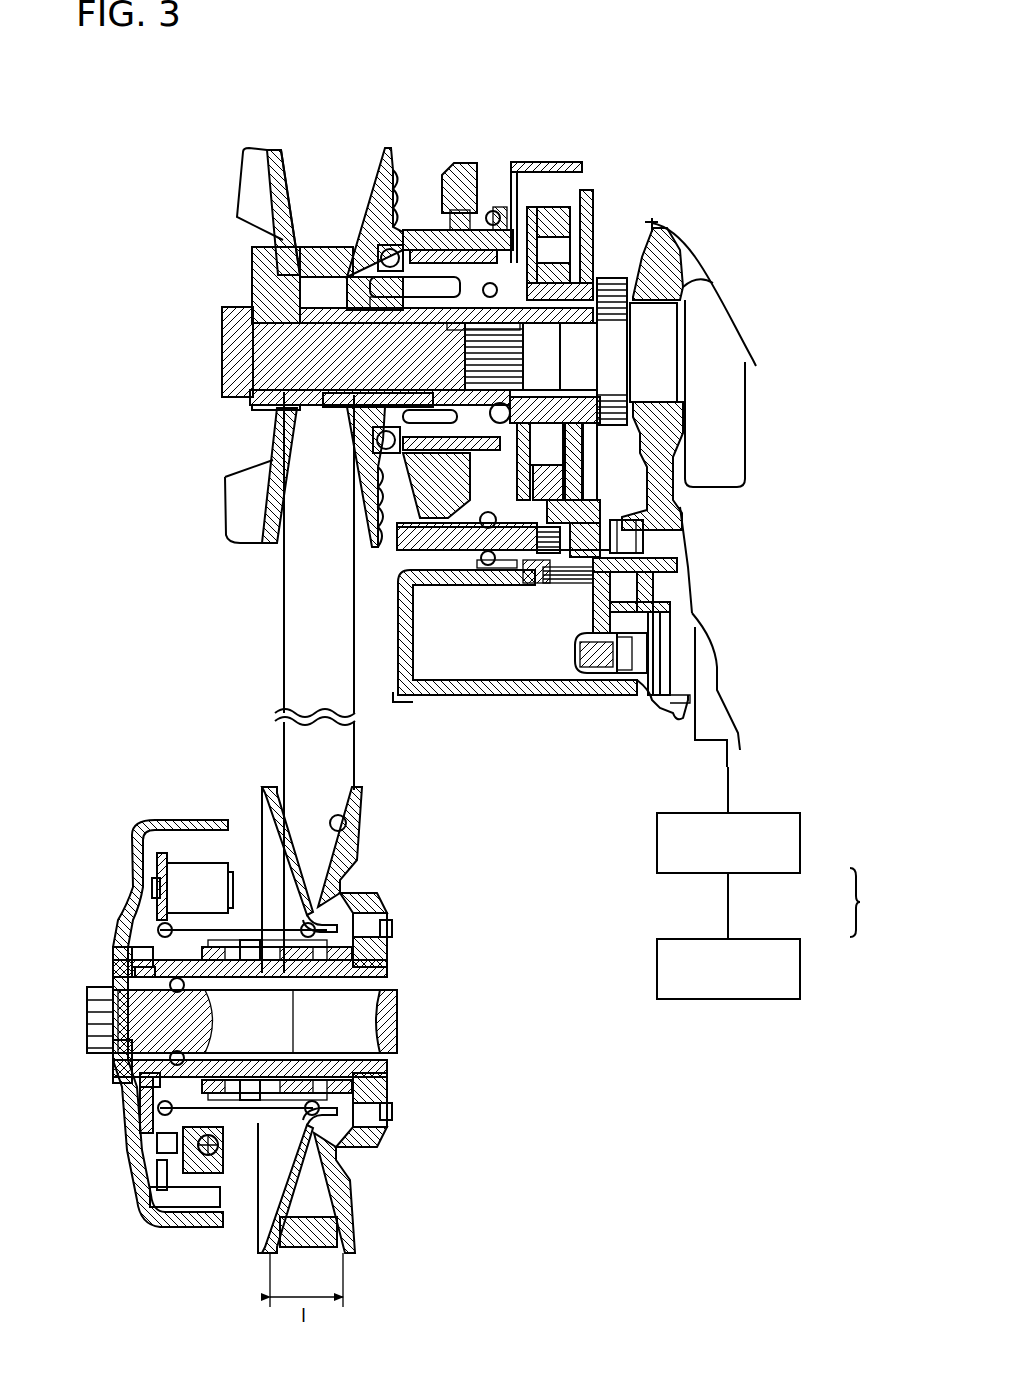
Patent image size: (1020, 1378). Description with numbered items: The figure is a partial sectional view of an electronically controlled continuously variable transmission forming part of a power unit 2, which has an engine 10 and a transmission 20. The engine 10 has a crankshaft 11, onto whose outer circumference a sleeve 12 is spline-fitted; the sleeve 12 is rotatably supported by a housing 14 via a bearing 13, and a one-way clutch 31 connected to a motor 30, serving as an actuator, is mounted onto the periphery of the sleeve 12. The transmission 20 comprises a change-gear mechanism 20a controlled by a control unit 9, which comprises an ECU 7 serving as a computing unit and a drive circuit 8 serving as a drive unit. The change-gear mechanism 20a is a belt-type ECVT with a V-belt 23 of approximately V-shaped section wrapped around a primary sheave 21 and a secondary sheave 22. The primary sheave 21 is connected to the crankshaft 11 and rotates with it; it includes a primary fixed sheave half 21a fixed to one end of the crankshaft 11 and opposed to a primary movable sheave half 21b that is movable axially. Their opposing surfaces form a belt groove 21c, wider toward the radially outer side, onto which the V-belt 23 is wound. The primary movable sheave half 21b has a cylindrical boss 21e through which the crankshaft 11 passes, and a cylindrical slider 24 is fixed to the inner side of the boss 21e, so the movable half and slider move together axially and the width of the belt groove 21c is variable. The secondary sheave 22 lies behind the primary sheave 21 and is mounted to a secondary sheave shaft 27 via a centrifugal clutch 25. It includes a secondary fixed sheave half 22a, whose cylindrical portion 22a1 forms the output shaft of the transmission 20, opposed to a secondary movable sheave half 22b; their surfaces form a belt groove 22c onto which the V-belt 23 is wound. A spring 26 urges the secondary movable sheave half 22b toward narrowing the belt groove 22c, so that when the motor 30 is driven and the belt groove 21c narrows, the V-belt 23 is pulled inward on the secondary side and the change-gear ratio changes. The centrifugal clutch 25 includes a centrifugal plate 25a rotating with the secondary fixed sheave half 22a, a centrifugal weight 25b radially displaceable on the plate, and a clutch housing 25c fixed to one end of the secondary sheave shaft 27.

The power unit 2 is at (627, 107).
The ECU 7 is at (800, 955).
The drive circuit 8 is at (800, 843).
The control unit 9 is at (863, 902).
The engine 10 is at (750, 412).
The crankshaft 11 is at (708, 328).
The sleeve 12 is at (577, 317).
The bearing 13 is at (513, 163).
The housing 14 is at (417, 615).
The transmission 20 is at (137, 218).
The change-gear mechanism 20a is at (277, 612).
The primary sheave 21 is at (248, 265).
The primary fixed sheave half 21a is at (260, 217).
The primary movable sheave half 21b is at (393, 187).
The belt groove 21c is at (297, 230).
The boss 21e is at (400, 278).
The secondary sheave 22 is at (353, 1190).
The secondary fixed sheave half 22a is at (357, 858).
The cylindrical portion 22a1 is at (387, 953).
The secondary movable sheave half 22b is at (262, 803).
The belt groove 22c is at (343, 818).
The V-belt 23 is at (345, 753).
The slider 24 is at (353, 438).
The centrifugal clutch 25 is at (102, 868).
The centrifugal plate 25a is at (147, 1107).
The centrifugal weight 25b is at (203, 863).
The clutch housing 25c is at (123, 832).
The spring 26 is at (362, 905).
The secondary sheave shaft 27 is at (393, 1040).
The motor 30 is at (683, 663).
The one-way clutch 31 is at (552, 215).